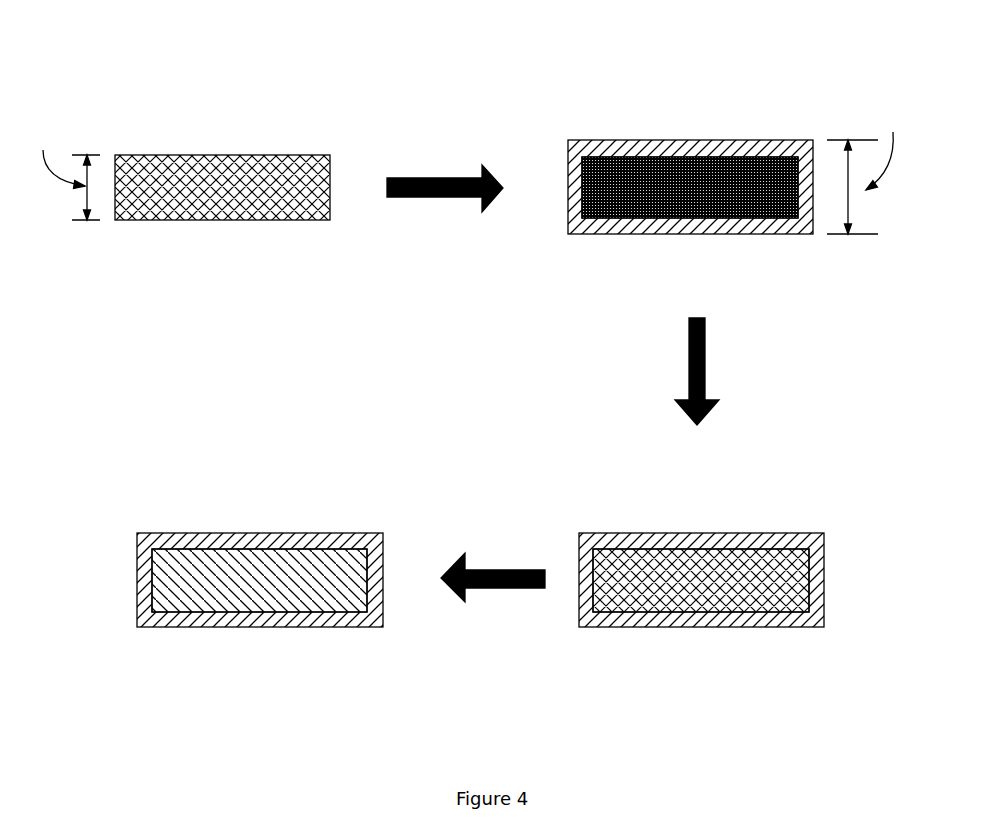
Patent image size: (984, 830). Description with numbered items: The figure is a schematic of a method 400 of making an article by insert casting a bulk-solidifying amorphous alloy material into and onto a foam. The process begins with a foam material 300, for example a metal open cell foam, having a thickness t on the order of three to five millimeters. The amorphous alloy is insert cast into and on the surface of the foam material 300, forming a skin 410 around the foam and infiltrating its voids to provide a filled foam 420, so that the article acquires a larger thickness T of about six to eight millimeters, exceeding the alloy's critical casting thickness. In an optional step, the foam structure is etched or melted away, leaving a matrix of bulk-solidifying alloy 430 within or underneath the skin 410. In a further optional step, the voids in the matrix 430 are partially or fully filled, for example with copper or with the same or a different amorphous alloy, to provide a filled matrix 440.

The method of forming a composite material 400 is at (288, 76).
The foam material 300 is at (246, 235).
The skin 410 is at (756, 139).
The filled foam 420 is at (632, 208).
The matrix of bulk-solidifying alloy 430 is at (645, 598).
The filled matrix 440 is at (203, 597).